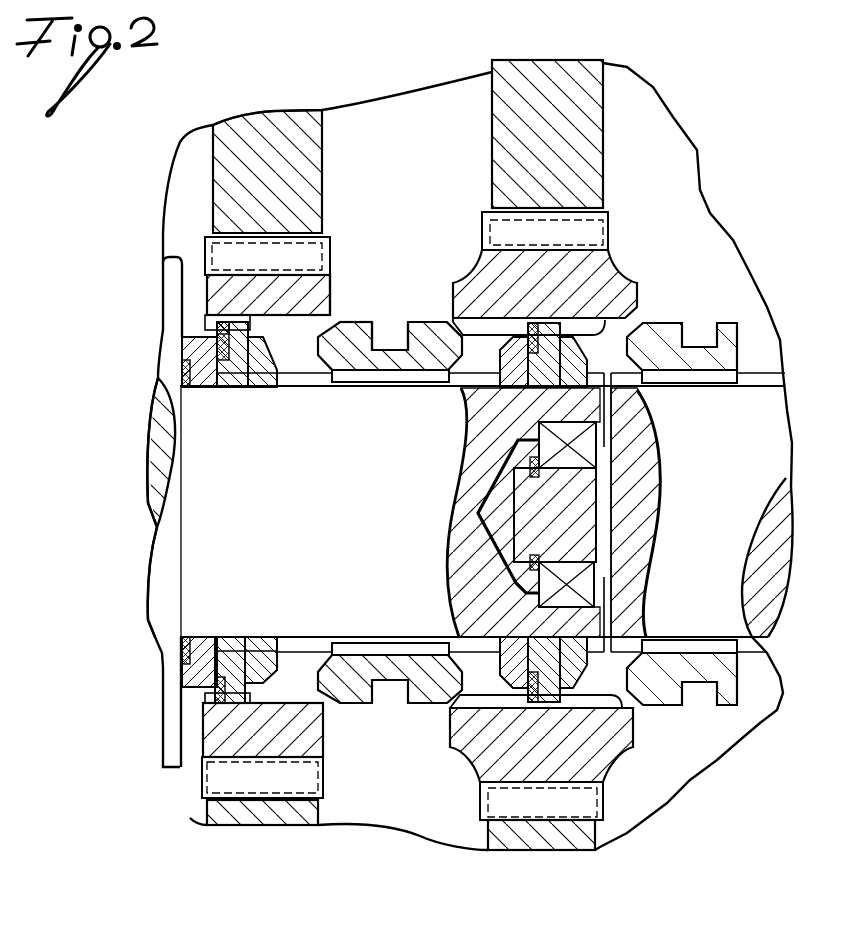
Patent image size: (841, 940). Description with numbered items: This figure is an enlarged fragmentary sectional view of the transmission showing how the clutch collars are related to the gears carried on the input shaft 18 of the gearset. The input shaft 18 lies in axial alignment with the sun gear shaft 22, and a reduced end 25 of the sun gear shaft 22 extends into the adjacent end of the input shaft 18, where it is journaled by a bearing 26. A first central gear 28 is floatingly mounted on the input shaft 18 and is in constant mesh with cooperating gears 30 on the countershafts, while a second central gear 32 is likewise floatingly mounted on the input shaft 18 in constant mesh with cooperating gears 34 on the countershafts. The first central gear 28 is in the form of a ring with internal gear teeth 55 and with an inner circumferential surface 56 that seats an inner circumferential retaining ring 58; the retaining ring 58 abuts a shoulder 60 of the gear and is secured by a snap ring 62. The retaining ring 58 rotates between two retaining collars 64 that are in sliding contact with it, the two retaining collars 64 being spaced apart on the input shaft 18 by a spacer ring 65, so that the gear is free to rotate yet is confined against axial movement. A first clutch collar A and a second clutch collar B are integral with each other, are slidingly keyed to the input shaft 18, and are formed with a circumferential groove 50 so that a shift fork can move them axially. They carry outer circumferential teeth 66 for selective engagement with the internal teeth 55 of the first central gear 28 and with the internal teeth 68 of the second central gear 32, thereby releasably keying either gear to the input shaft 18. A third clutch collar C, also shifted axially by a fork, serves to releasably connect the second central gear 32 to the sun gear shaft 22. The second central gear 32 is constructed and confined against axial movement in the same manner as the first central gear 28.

The input shaft 18 is at (330, 527).
The sun gear shaft 22 is at (612, 520).
The reduced end 25 is at (536, 523).
The bearing 26 is at (586, 585).
The first central gear 28 is at (317, 283).
The cooperating gears 30 is at (306, 190).
The second central gear 32 is at (502, 272).
The cooperating gears 34 is at (520, 140).
The circumferential groove 50 is at (396, 338).
The internal gear teeth 55 is at (300, 313).
The inner circumferential surface 56 is at (240, 328).
The retaining ring 58 is at (204, 388).
The shoulder 60 is at (250, 328).
The snap ring 62 is at (222, 320).
The retaining collars 64 is at (205, 340).
The spacer ring 65 is at (217, 387).
The outer circumferential teeth 66 is at (375, 325).
The internal teeth 68 is at (502, 325).
The first clutch collar A is at (356, 312).
The second clutch collar B is at (427, 312).
The third clutch collar C is at (682, 502).